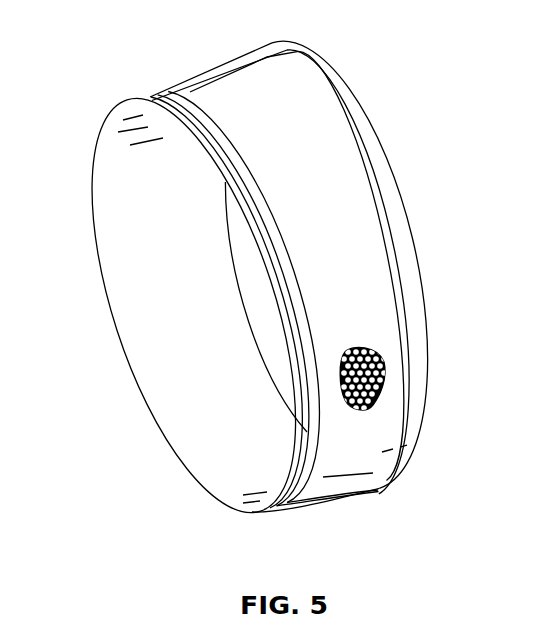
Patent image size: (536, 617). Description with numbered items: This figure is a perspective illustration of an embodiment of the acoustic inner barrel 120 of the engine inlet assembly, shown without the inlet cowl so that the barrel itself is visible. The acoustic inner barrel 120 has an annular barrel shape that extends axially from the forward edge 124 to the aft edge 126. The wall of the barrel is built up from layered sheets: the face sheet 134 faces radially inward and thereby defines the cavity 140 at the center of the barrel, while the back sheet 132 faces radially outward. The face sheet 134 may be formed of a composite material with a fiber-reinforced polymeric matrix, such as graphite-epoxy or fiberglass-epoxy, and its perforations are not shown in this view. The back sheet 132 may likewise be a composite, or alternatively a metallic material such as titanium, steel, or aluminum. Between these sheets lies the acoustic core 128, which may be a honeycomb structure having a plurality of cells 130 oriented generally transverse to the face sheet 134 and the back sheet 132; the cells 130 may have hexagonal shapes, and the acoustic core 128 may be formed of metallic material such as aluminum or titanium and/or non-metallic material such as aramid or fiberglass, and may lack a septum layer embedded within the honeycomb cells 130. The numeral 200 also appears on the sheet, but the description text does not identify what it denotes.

The acoustic inner barrel 120 is at (261, 292).
The forward edge 124 is at (245, 515).
The aft edge 126 is at (415, 452).
The acoustic core 128 is at (380, 388).
The cells 130 is at (364, 402).
The back sheet 132 is at (313, 500).
The face sheet 134 is at (208, 470).
The cavity 140 is at (148, 340).
The device 200 is at (410, 609).